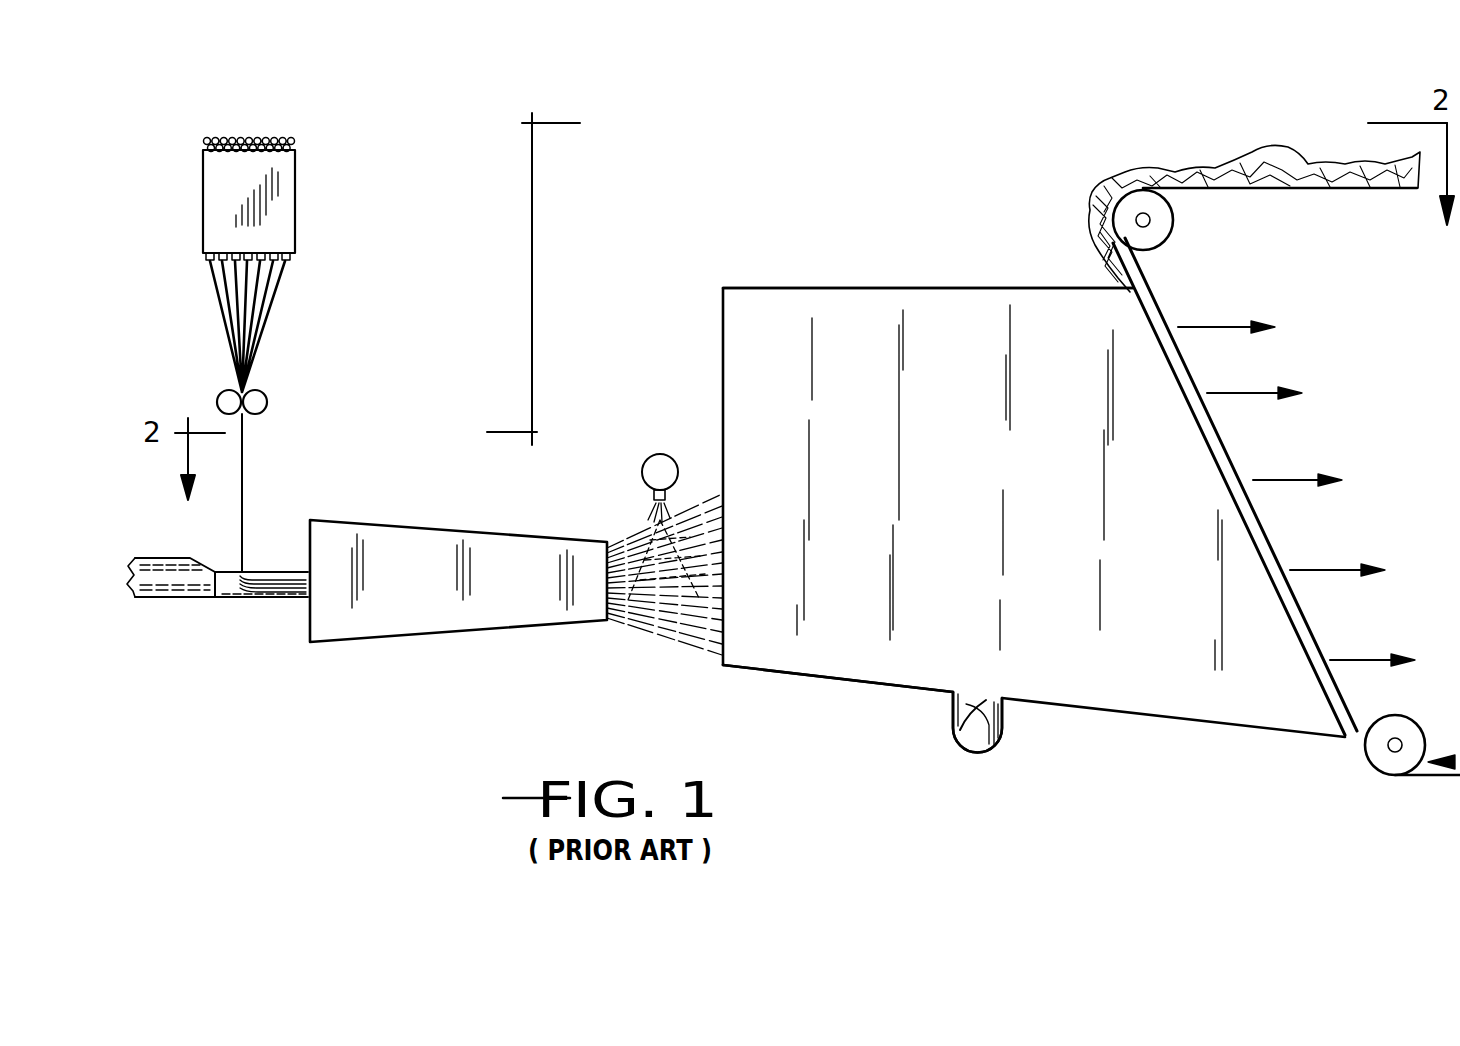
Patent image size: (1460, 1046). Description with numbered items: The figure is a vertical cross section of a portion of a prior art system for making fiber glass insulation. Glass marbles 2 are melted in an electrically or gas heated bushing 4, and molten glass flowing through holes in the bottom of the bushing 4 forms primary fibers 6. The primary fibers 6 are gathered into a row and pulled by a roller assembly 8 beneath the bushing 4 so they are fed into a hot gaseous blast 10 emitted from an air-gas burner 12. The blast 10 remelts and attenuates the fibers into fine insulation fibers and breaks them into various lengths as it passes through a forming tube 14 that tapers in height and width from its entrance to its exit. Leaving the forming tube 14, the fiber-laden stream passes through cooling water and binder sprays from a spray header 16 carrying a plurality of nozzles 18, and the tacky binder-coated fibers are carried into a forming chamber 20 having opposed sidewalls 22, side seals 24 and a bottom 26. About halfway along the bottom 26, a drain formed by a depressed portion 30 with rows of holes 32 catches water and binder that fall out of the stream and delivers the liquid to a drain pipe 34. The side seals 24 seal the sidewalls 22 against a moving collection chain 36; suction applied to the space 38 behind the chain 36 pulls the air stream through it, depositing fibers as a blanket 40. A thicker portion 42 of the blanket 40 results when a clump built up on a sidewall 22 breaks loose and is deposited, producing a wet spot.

The glass marbles 2 is at (262, 142).
The bushing 4 is at (283, 196).
The primary fibers 6 is at (283, 290).
The roller assembly 8 is at (268, 402).
The hot gaseous blast 10 is at (236, 572).
The air-gas burner 12 is at (172, 580).
The forming tube 14 is at (430, 552).
The spray header 16 is at (660, 454).
The nozzles 18 is at (650, 497).
The forming chamber 20 is at (962, 486).
The sidewalls 22 is at (930, 306).
The side seals 24 is at (1310, 650).
The bottom 26 is at (866, 683).
The depressed portion 30 is at (978, 706).
The holes 32 is at (960, 730).
The drain pipe 34 is at (984, 746).
The collection chain 36 is at (1430, 782).
The space 38 is at (1398, 420).
The blanket 40 is at (1090, 186).
The thicker portion 42 is at (1290, 162).